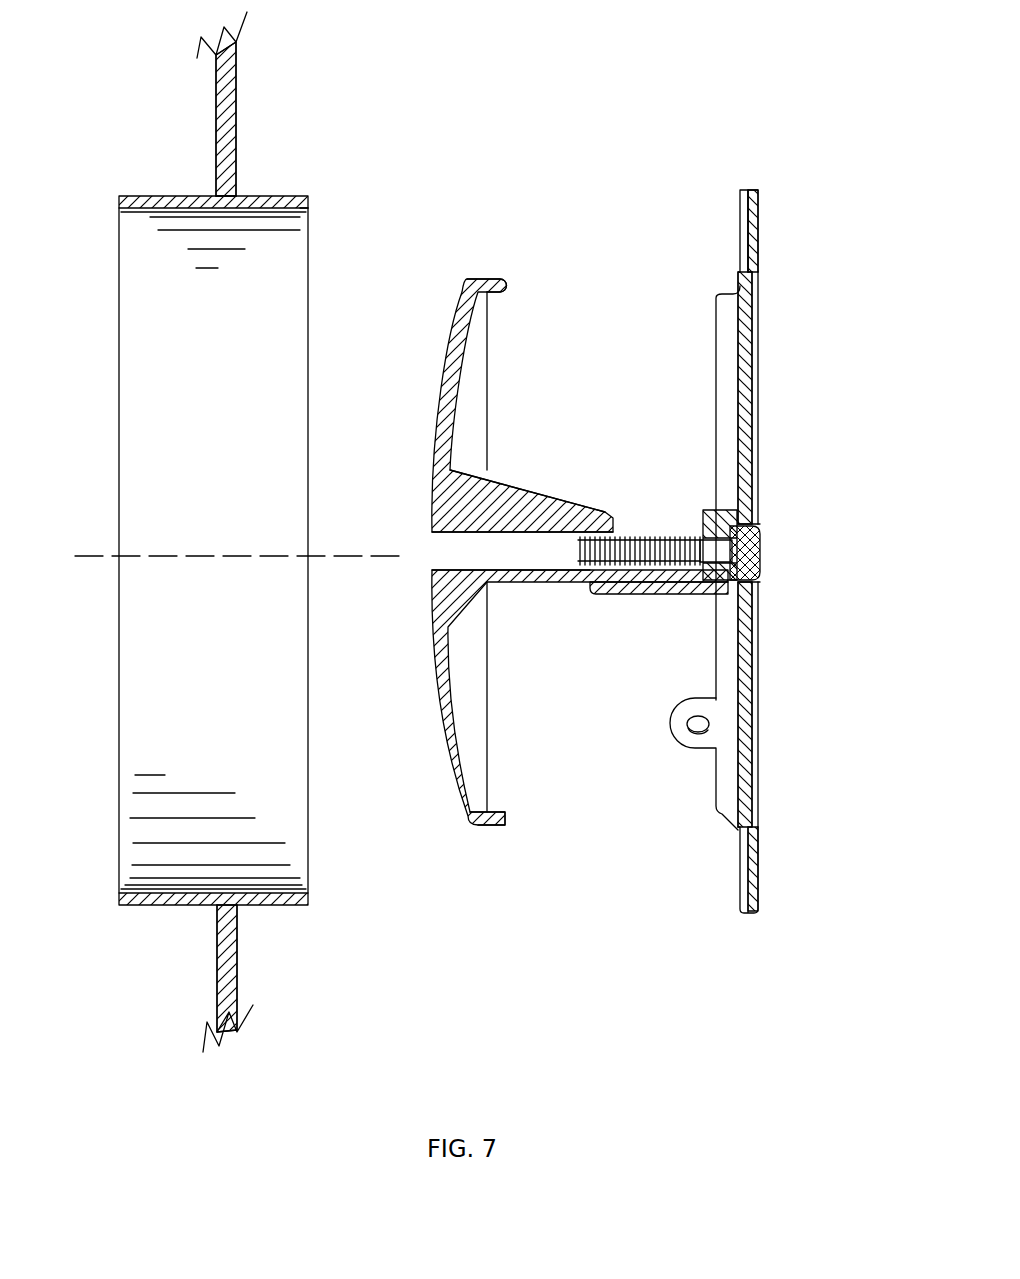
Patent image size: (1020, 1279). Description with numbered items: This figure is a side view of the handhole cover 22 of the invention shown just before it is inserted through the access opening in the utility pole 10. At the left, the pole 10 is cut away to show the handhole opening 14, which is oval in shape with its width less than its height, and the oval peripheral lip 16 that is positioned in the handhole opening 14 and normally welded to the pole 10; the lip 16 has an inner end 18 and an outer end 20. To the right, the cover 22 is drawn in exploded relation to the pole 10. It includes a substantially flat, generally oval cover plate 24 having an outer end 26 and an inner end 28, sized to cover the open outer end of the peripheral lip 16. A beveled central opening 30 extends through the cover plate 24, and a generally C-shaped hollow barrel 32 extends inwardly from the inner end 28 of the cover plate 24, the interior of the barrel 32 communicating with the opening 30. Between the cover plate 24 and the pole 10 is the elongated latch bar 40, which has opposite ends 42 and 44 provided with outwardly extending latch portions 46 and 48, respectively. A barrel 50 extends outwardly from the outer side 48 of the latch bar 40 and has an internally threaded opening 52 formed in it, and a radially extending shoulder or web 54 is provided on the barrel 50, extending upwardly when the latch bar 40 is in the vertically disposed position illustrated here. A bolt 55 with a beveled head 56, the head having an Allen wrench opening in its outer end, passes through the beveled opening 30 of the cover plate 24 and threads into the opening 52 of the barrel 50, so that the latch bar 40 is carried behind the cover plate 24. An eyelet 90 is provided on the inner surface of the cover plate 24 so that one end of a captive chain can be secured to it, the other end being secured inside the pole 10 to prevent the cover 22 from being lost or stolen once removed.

The utility pole 10 is at (233, 96).
The handhole opening 14 is at (214, 200).
The peripheral lip 16 is at (272, 200).
The inner end 18 is at (120, 206).
The outer end 20 is at (300, 206).
The handhole cover 22 is at (711, 511).
The cover plate 24 is at (763, 204).
The outer end 26 is at (758, 244).
The inner end 28 is at (726, 284).
The beveled central opening 30 is at (756, 505).
The hollow barrel 32 is at (686, 594).
The latch bar 40 is at (535, 544).
The end of latch bar 42 is at (490, 268).
The end of latch bar 44 is at (495, 832).
The latch portion 46 is at (430, 430).
The latch portion 48 is at (500, 432).
The barrel 50 is at (530, 582).
The internally threaded opening 52 is at (597, 530).
The web 54 is at (518, 500).
The bolt 55 is at (744, 554).
The beveled head 56 is at (760, 580).
The eyelet 90 is at (696, 726).